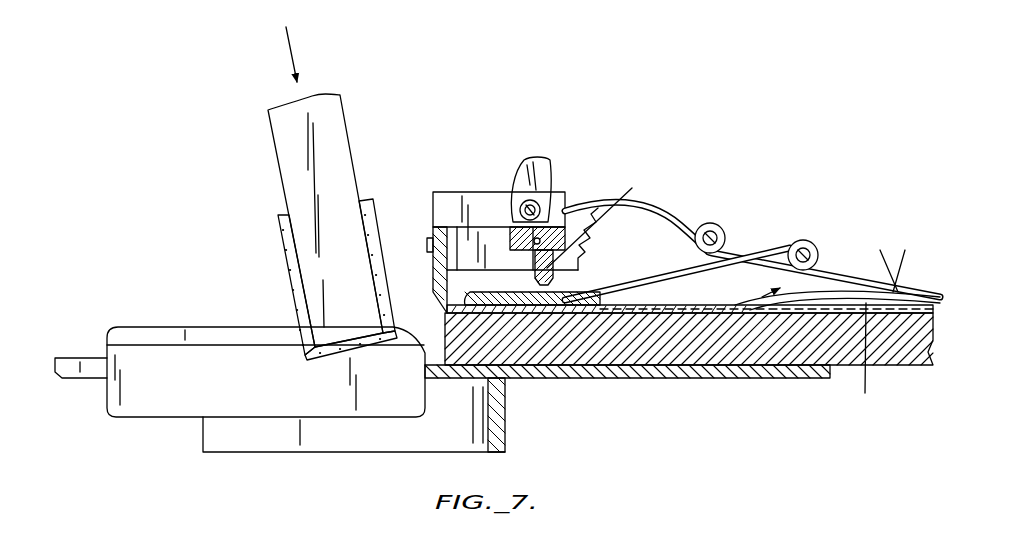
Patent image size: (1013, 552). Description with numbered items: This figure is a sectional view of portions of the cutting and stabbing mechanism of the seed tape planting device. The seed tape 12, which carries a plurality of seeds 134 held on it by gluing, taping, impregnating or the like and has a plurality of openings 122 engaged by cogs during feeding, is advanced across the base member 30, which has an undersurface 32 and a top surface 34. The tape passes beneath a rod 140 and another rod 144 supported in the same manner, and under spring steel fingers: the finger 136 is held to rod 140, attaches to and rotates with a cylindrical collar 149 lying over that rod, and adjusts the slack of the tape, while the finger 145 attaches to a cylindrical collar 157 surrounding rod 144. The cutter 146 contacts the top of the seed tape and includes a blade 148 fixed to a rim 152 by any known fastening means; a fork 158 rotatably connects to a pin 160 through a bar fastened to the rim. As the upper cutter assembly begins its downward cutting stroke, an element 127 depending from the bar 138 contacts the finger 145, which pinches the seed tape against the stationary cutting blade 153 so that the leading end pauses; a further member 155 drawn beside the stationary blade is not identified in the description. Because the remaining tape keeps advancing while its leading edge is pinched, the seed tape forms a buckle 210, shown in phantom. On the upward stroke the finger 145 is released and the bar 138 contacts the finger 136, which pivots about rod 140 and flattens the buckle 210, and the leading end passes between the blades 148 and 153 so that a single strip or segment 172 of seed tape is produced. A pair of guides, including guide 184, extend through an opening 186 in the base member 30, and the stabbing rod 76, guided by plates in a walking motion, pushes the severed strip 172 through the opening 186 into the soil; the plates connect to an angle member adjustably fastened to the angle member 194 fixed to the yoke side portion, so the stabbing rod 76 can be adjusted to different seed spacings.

The seed tape 12 is at (876, 357).
The base member 30 is at (793, 382).
The undersurface 32 is at (668, 370).
The top surface 34 is at (770, 378).
The stabbing rod 76 is at (330, 138).
The openings 122 is at (483, 286).
The element depending from bar 127 is at (604, 219).
The seeds 134 is at (592, 292).
The finger 136 is at (650, 204).
The bar 138 is at (510, 222).
The rod 140 is at (726, 238).
The rod 144 is at (812, 243).
The finger 145 is at (693, 287).
The cutter 146 is at (488, 166).
The blade 148 is at (432, 241).
The cylindrical collar 149 is at (722, 226).
The rim 152 is at (456, 192).
The stationary cutting blade 153 is at (512, 318).
The raised step 155 is at (617, 355).
The cylindrical collar 157 is at (820, 256).
The fork 158 is at (545, 162).
The pin 160 is at (540, 210).
The strip or segment of seed tape 172 is at (278, 235).
The guide 184 is at (223, 358).
The opening 186 is at (110, 370).
The angle member 194 is at (470, 432).
The buckle 210 is at (752, 300).